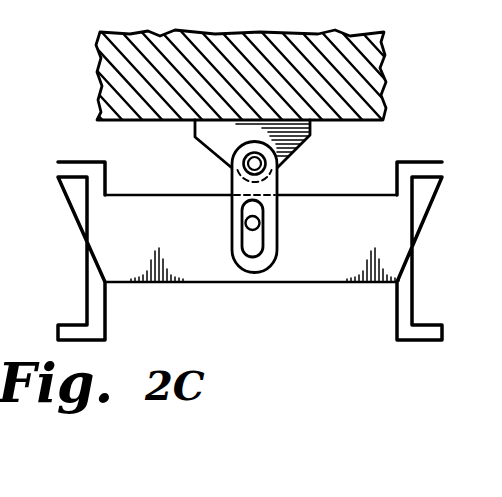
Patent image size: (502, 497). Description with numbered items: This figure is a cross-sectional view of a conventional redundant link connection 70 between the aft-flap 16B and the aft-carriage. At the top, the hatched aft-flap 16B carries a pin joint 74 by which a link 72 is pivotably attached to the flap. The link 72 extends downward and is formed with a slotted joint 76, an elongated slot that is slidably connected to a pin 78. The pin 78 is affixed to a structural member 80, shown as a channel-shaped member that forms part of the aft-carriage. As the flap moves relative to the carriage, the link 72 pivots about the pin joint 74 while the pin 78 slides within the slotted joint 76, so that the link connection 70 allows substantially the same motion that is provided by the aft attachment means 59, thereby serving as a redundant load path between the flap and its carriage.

The aft attachment means 59 is at (14, 93).
The aft-flap 16B is at (387, 78).
The redundant link connection 70 is at (267, 220).
The link 72 is at (279, 180).
The pin joint 74 is at (216, 155).
The slotted joint 76 is at (265, 233).
The pin 78 is at (245, 226).
The structural member 80 is at (412, 262).